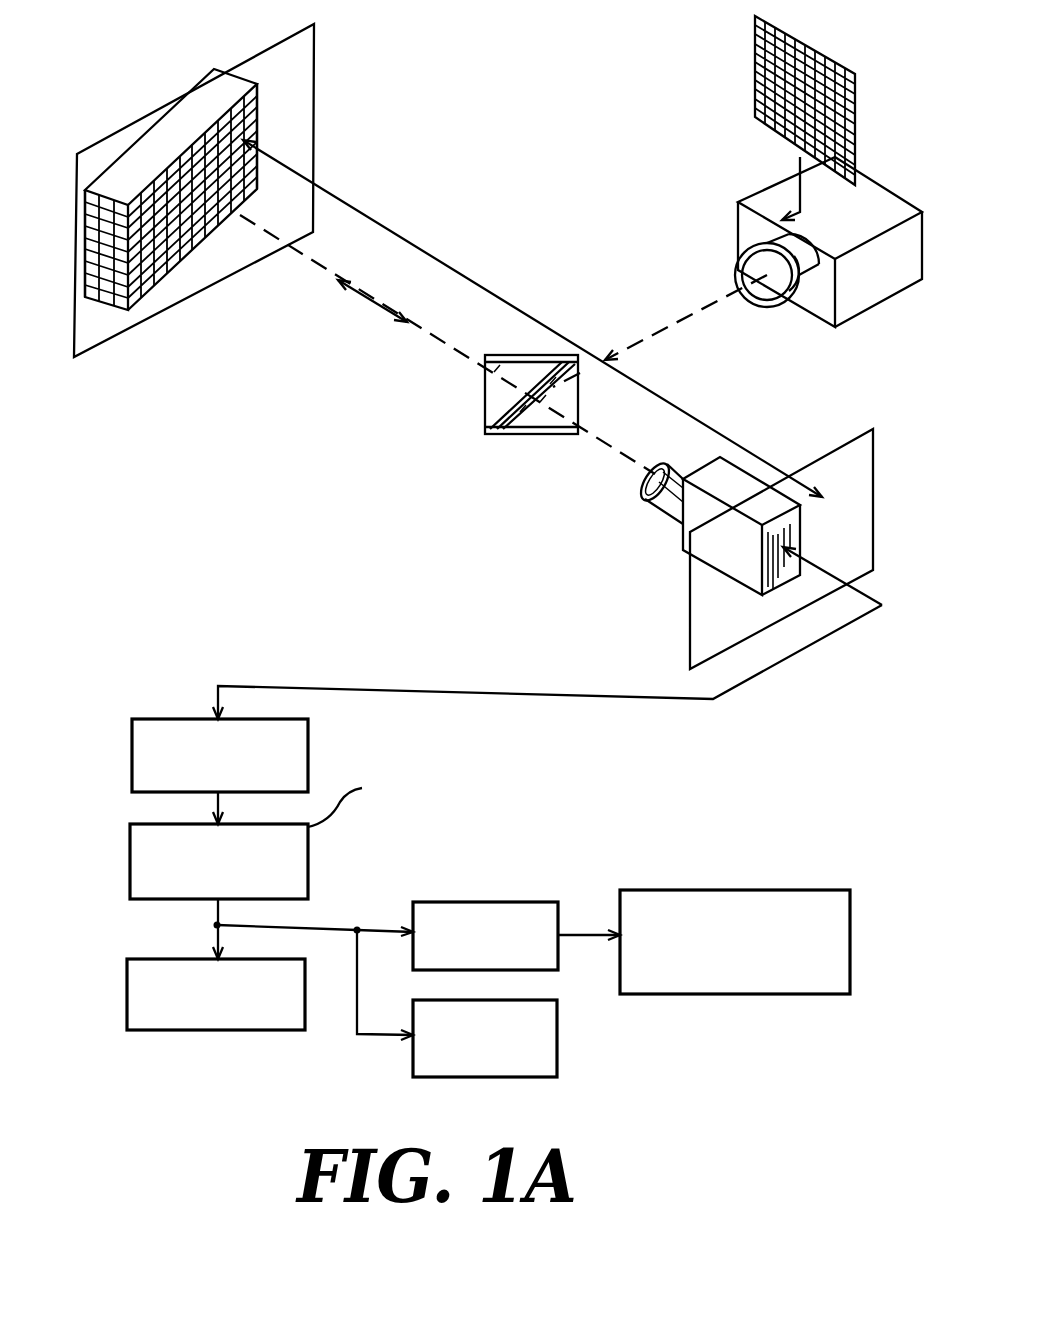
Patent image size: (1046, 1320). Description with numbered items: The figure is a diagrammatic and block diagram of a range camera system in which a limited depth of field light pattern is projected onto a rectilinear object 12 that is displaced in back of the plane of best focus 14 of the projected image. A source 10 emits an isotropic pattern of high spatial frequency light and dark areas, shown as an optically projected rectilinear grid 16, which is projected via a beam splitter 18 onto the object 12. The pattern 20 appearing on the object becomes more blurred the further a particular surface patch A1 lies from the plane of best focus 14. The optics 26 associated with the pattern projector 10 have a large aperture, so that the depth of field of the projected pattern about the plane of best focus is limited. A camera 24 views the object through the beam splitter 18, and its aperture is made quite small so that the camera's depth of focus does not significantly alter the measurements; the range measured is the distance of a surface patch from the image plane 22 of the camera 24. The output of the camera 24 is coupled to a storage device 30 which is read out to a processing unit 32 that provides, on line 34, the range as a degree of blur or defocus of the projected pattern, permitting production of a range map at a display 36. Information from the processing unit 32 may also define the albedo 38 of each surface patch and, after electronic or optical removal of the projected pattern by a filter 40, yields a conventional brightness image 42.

The source 10 is at (848, 295).
The object 12 is at (214, 67).
The plane of best focus 14 is at (313, 112).
The optically projected rectilinear grid 16 is at (757, 86).
The beam splitter 18 is at (487, 402).
The pattern 20 is at (85, 250).
The image plane 22 is at (690, 630).
The camera 24 is at (693, 515).
The optics 26 is at (742, 255).
The storage device 30 is at (308, 735).
The processing unit 32 is at (308, 862).
The line 34 is at (216, 900).
The display 36 is at (165, 957).
The albedo 38 is at (540, 998).
The filter 40 is at (500, 900).
The conventional brightness image 42 is at (745, 890).
The surface patch A1 is at (257, 106).